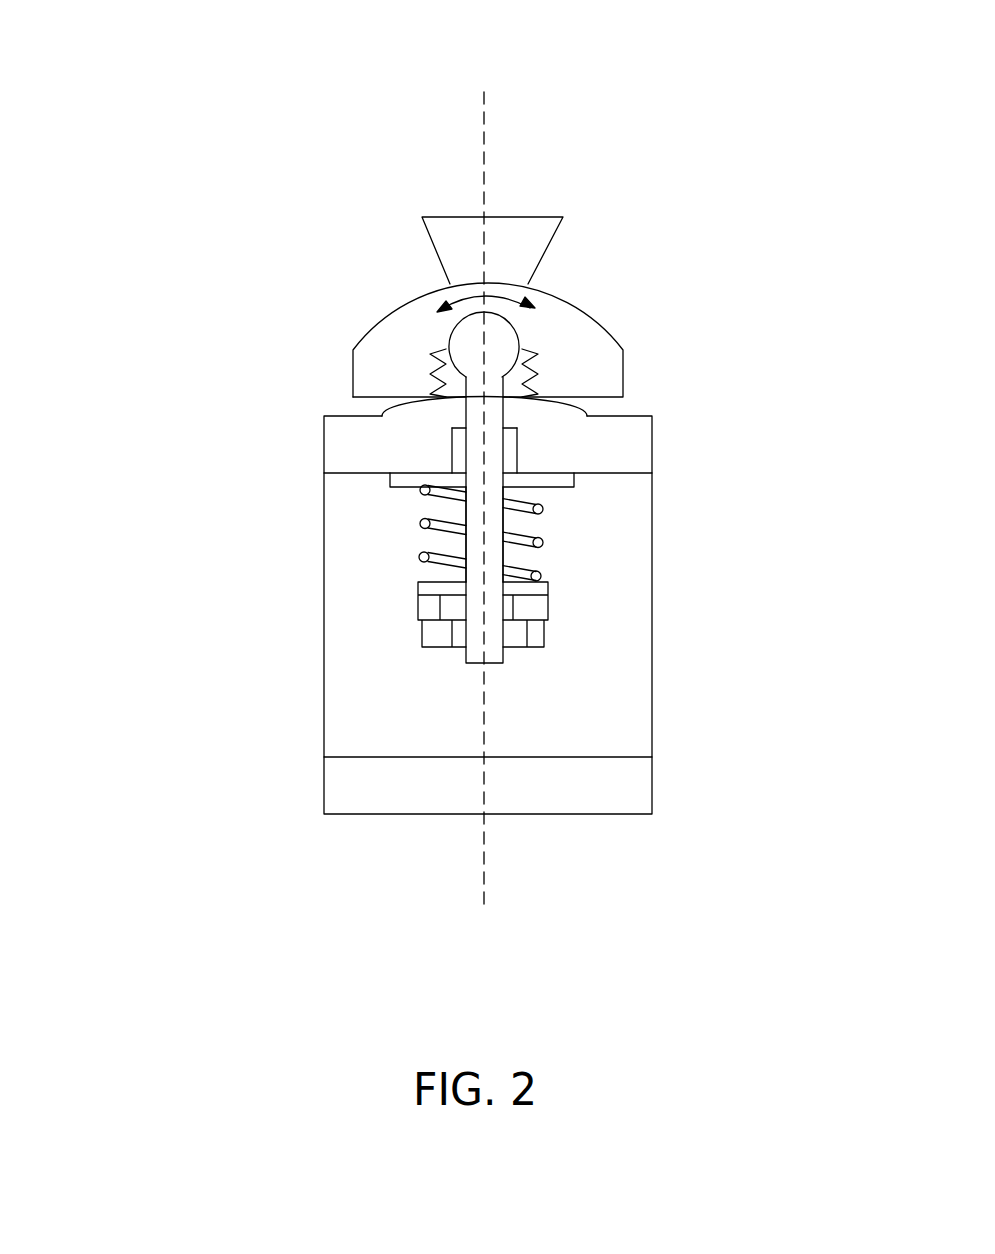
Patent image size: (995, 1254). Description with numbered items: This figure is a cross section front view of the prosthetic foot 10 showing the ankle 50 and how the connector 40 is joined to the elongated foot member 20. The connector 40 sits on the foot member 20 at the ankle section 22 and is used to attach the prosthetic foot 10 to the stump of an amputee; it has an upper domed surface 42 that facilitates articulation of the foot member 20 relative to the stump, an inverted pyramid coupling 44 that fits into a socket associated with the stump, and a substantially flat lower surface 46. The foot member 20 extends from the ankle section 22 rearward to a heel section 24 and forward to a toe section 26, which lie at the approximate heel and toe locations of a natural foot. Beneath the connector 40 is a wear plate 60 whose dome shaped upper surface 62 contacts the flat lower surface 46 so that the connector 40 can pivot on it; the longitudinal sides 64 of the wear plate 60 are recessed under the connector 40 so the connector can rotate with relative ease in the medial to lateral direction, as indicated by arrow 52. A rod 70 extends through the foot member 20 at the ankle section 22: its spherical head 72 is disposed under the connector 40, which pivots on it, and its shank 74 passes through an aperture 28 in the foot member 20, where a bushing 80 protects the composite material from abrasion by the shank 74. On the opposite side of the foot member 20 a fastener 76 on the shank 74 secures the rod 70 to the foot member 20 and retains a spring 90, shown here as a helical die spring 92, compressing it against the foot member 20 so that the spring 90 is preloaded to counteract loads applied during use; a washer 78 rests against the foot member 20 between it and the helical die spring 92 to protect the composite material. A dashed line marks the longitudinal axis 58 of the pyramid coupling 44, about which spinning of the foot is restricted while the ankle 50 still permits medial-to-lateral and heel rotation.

The prosthetic foot 10 is at (242, 130).
The elongated foot member 20 is at (167, 428).
The ankle section 22 is at (615, 440).
The heel section 24 is at (377, 640).
The toe section 26 is at (587, 788).
The aperture 28 is at (448, 450).
The connector 40 is at (345, 277).
The upper domed surface 42 is at (363, 336).
The inverted pyramid coupling 44 is at (463, 230).
The lower surface 46 is at (372, 398).
The ankle 50 is at (695, 243).
The arrow 52 is at (498, 295).
The longitudinal axis 58 is at (485, 142).
The wear plate 60 is at (518, 405).
The upper surface 62 is at (578, 410).
The longitudinal sides 64 is at (503, 428).
The rod 70 is at (503, 452).
The spherical head 72 is at (515, 352).
The shank 74 is at (466, 502).
The fastener 76 is at (547, 612).
The washer 78 is at (537, 480).
The bushing 80 is at (460, 468).
The spring 90 is at (540, 512).
The helical die spring 92 is at (420, 492).